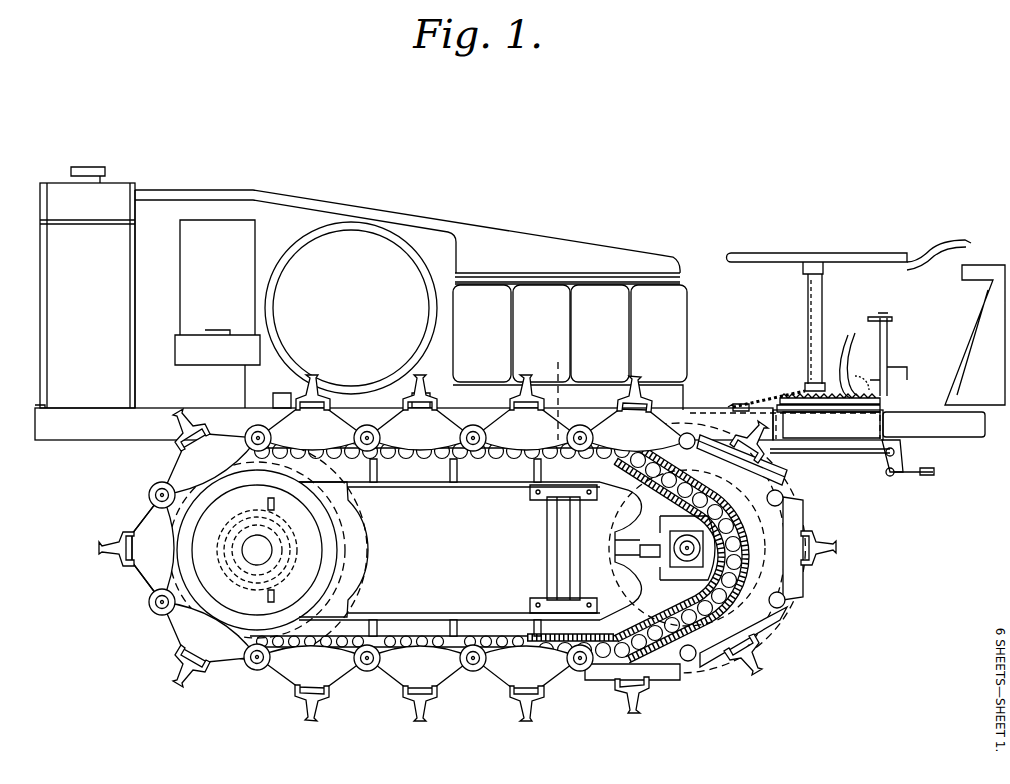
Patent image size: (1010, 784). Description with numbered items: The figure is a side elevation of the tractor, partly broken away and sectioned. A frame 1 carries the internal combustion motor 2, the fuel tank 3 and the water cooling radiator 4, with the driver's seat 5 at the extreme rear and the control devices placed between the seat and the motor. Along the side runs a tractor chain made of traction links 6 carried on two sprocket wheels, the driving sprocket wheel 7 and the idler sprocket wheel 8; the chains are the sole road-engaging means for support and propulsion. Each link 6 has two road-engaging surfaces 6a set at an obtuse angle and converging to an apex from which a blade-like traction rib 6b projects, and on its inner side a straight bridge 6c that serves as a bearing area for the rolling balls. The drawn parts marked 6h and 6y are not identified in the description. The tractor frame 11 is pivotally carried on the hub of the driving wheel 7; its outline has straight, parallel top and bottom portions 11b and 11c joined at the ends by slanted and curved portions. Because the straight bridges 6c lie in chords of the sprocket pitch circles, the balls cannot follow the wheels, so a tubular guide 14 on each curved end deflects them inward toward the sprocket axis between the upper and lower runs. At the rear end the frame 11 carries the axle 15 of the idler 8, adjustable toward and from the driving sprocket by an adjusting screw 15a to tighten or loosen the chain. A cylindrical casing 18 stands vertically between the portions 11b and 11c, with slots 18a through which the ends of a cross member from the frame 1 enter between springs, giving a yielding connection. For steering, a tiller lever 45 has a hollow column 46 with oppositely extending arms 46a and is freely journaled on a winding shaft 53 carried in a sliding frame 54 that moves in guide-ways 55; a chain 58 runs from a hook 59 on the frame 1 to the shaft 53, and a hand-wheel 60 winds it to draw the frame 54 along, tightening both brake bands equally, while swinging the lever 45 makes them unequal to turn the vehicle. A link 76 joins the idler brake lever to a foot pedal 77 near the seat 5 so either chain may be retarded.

The frame 1 is at (72, 433).
The internal combustion motor 2 is at (542, 762).
The fuel tank 3 is at (351, 315).
The water cooling radiator 4 is at (87, 287).
The driver's seat 5 is at (990, 273).
The traction links 6 is at (457, 560).
The road-engaging surfaces 6a is at (253, 676).
The blade-like traction rib 6b is at (313, 380).
The bridge 6c is at (768, 478).
The front track link 6h is at (118, 552).
The track cleat 6y is at (290, 698).
The driving sprocket wheel 7 is at (368, 542).
The idler sprocket wheel 8 is at (715, 676).
The tractor frame 11 is at (490, 485).
The top portion of tractor frame 11b is at (436, 483).
The bottom portion of tractor frame 11c is at (452, 620).
The tubular guide 14 is at (160, 632).
The axle 15 is at (682, 542).
The adjusting screw 15a is at (640, 552).
The cylindrical casing 18 is at (547, 530).
The slots 18a is at (555, 603).
The tiller lever 45 is at (925, 254).
The hollow rock shaft or column 46 is at (808, 323).
The oppositely extending arms 46a is at (815, 378).
The winding shaft 53 is at (808, 300).
The sliding frame 54 is at (808, 390).
The guide-ways 55 is at (882, 407).
The chain 58 is at (768, 398).
The hook 59 is at (738, 408).
The hand-wheel 60 is at (742, 254).
The link 76 is at (850, 453).
The foot pedal 77 is at (915, 475).